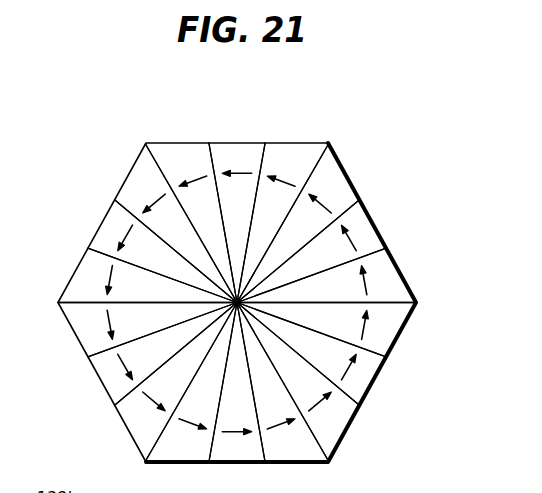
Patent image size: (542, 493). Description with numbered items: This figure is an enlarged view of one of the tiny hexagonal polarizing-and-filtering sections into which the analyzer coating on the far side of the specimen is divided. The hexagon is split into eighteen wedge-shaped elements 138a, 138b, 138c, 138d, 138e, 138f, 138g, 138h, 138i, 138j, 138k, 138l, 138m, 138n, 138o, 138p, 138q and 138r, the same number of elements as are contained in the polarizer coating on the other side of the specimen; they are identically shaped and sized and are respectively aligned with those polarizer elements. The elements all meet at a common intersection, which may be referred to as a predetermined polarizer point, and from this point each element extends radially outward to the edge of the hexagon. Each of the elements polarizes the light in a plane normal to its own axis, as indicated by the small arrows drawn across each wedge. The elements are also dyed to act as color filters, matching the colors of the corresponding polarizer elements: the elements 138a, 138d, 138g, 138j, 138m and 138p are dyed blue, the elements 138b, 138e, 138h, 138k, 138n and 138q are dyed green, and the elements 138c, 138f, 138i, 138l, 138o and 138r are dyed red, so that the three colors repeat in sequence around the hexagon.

The element 138a is at (245, 150).
The element 138b is at (293, 160).
The element 138c is at (333, 188).
The element 138d is at (363, 235).
The element 138e is at (388, 280).
The element 138f is at (388, 323).
The element 138g is at (358, 377).
The element 138h is at (335, 423).
The element 138i is at (292, 448).
The element 138j is at (242, 448).
The element 138k is at (188, 447).
The element 138l is at (145, 423).
The element 138m is at (110, 372).
The element 138n is at (88, 328).
The element 138o is at (90, 277).
The element 138p is at (113, 230).
The element 138q is at (140, 187).
The element 138r is at (180, 155).